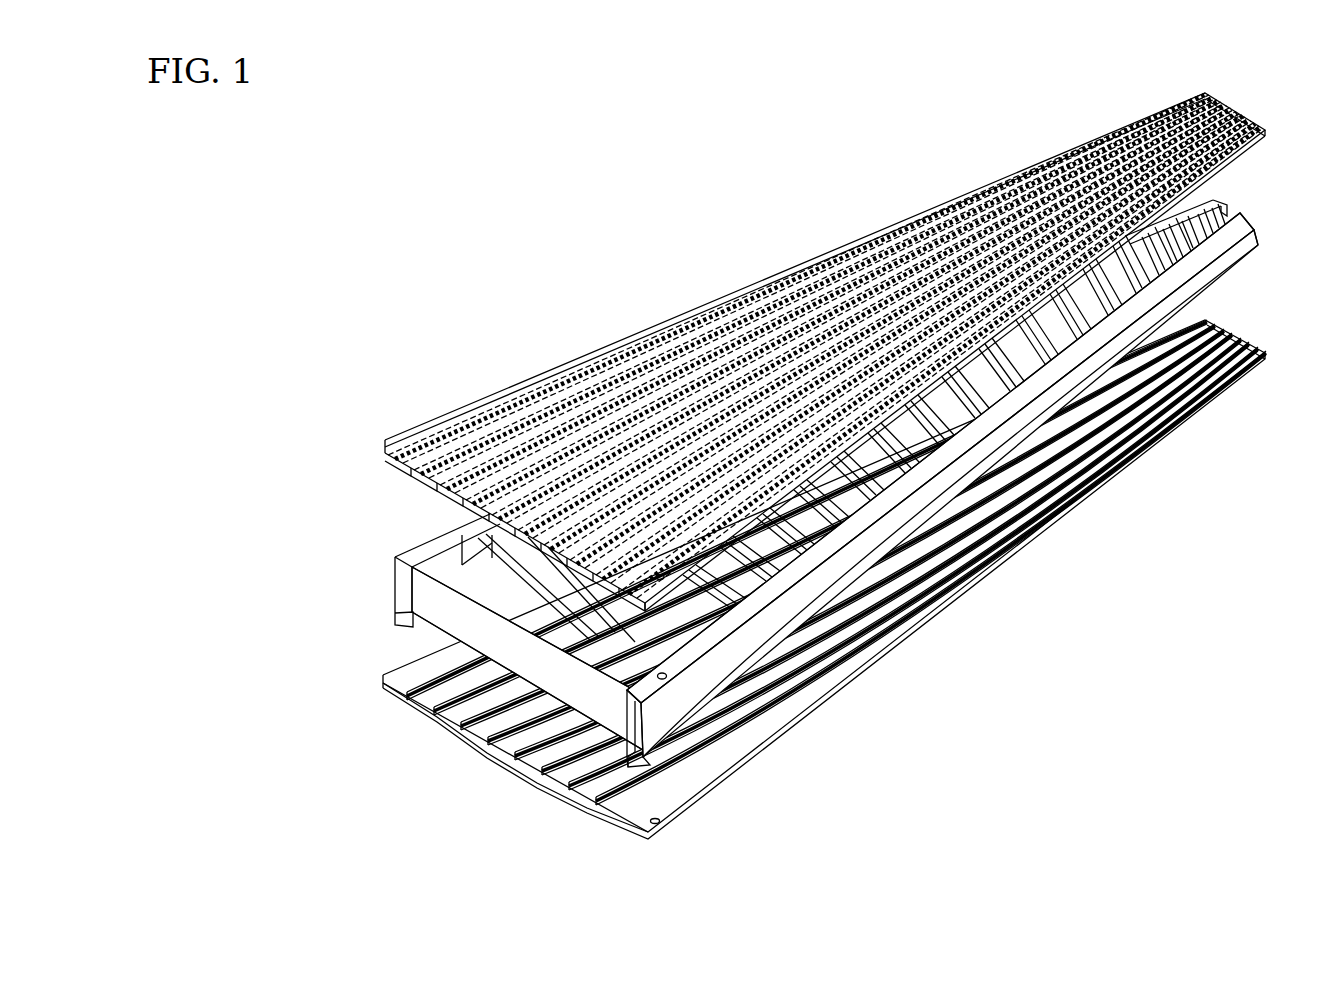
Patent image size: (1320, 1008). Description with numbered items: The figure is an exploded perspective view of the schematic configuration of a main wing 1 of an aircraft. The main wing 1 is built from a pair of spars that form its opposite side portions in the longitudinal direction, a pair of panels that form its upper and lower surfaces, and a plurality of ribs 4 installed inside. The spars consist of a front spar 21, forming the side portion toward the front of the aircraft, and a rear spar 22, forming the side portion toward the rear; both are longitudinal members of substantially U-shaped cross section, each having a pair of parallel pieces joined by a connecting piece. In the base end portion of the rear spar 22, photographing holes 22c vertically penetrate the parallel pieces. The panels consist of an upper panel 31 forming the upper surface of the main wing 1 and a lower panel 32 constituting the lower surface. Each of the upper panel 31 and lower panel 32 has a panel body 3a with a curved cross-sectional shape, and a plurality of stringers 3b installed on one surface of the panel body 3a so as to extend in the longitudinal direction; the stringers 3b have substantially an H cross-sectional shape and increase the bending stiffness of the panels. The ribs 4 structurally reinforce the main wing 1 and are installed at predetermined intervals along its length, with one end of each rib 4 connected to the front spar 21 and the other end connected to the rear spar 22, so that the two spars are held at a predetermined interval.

The main wing 1 is at (680, 230).
The ribs 4 is at (926, 444).
The front spar 21 is at (392, 546).
The rear spar 22 is at (793, 622).
The photographing holes 22c is at (670, 680).
The upper panel 31 is at (506, 392).
The lower panel 32 is at (482, 762).
The panel body 3a is at (428, 442).
The stringers 3b is at (480, 710).